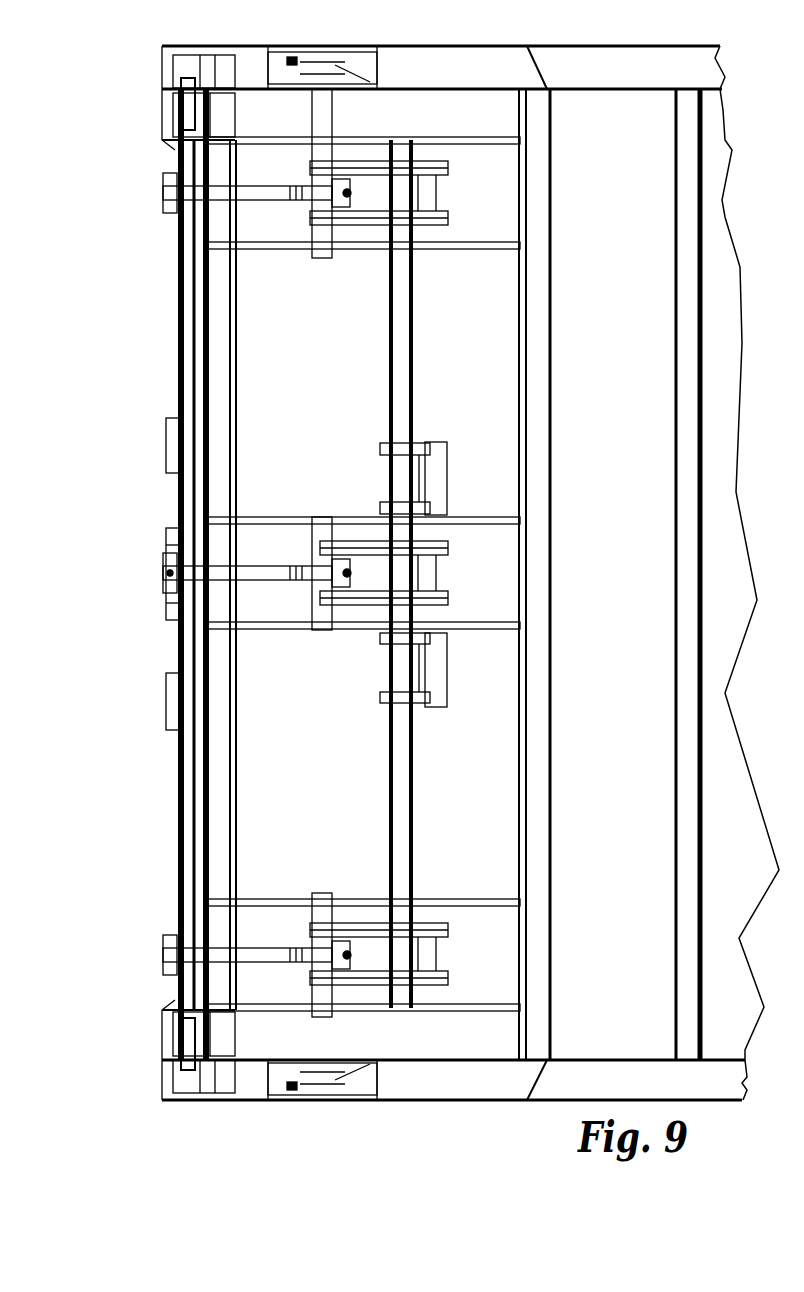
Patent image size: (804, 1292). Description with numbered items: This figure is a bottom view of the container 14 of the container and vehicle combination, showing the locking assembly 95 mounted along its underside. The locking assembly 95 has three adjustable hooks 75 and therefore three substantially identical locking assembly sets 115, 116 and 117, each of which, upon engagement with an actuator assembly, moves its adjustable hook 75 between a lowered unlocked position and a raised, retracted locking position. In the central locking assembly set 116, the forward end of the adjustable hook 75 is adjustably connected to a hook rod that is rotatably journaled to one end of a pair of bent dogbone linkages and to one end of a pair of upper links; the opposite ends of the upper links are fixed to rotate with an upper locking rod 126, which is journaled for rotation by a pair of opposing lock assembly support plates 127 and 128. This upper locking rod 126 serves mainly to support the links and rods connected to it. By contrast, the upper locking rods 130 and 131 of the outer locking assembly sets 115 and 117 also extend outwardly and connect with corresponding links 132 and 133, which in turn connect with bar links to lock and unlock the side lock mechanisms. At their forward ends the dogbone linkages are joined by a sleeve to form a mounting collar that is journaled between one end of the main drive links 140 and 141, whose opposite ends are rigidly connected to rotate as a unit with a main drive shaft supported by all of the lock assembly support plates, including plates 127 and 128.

The container 14 is at (547, 46).
The adjustable hook 75 is at (160, 573).
The locking assembly 95 is at (128, 627).
The locking assembly set 115 is at (130, 194).
The locking assembly set 116 is at (112, 600).
The locking assembly set 117 is at (100, 920).
The upper locking rod 126 is at (312, 540).
The lock assembly support plate 127 is at (258, 516).
The lock assembly support plate 128 is at (258, 630).
The upper locking rod 130 is at (310, 230).
The upper locking rod 131 is at (306, 912).
The link 132 is at (345, 62).
The link 133 is at (333, 1080).
The main drive link 140 is at (432, 525).
The main drive link 141 is at (445, 620).